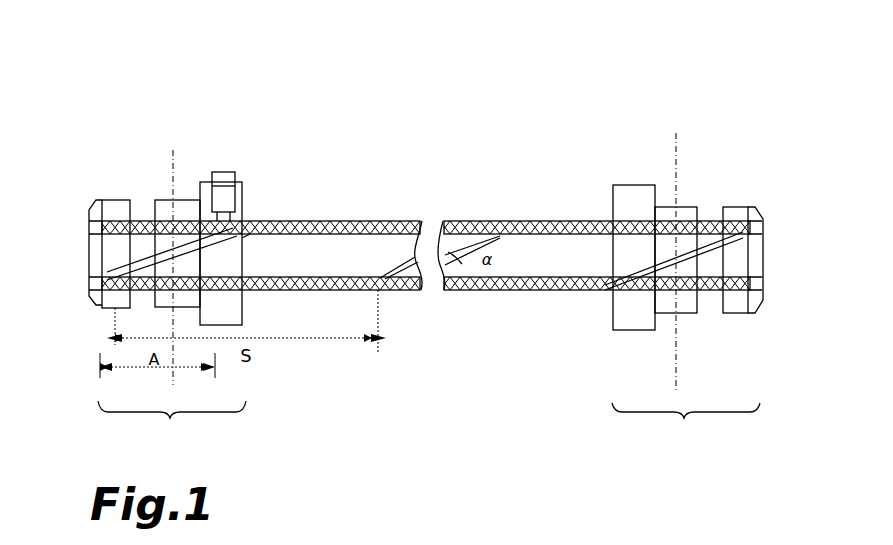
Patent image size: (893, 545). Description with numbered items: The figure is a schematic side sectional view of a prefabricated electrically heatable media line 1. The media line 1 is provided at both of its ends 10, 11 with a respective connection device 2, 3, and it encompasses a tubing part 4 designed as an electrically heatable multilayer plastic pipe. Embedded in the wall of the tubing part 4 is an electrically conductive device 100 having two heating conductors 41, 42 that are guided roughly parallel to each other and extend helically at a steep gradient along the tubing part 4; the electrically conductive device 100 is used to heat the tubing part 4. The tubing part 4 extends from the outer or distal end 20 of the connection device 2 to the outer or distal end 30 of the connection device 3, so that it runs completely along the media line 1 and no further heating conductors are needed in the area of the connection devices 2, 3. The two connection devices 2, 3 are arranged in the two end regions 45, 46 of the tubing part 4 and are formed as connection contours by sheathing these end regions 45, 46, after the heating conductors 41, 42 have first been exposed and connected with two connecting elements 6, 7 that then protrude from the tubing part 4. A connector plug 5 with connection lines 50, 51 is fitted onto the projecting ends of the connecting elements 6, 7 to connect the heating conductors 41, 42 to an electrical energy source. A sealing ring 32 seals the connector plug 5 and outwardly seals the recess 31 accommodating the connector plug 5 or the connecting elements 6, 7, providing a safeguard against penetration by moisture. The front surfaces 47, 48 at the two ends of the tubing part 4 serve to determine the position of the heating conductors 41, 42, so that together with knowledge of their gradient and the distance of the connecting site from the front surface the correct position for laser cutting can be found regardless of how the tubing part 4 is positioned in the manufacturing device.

The prefabricated electrically heatable media line 1 is at (113, 127).
The connection device 2 is at (118, 205).
The connection device 3 is at (689, 247).
The tubing part 4 is at (150, 205).
The connector plug 5 is at (243, 217).
The connecting element 6 is at (257, 221).
The connecting element 7 is at (262, 232).
The end of media line 10 is at (80, 158).
The end of media line 11 is at (758, 173).
The outer or distal end of connection device 20 is at (100, 301).
The outer or distal end of connection device 30 is at (753, 295).
The recess 31 is at (212, 178).
The sealing ring 32 is at (225, 202).
The heating conductor 41 is at (645, 295).
The heating conductor 42 is at (695, 297).
The end region of tubing part 45 is at (172, 421).
The end region of tubing part 46 is at (686, 423).
The front surface 47 is at (88, 218).
The front surface 48 is at (760, 217).
The connection line 50 is at (220, 172).
The connection line 51 is at (231, 172).
The electrically conductive device 100 is at (688, 250).